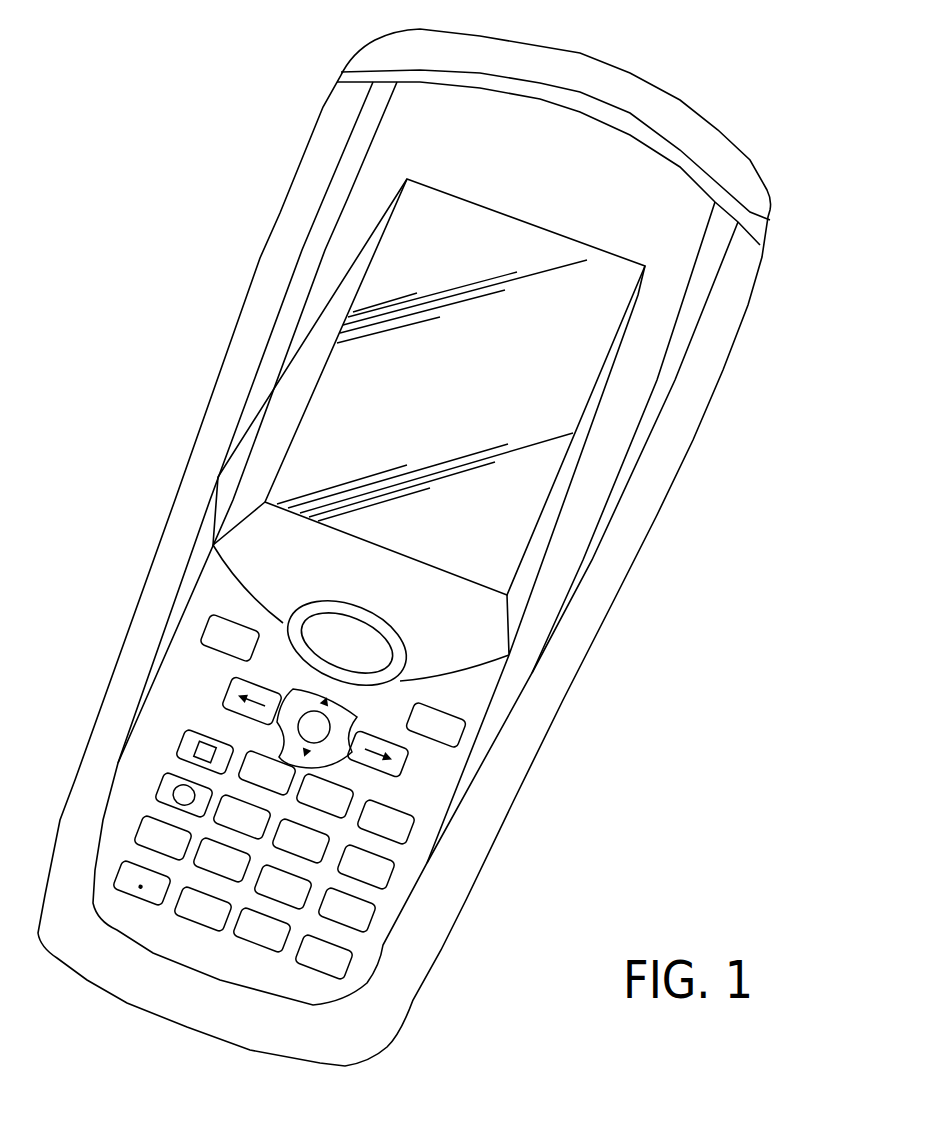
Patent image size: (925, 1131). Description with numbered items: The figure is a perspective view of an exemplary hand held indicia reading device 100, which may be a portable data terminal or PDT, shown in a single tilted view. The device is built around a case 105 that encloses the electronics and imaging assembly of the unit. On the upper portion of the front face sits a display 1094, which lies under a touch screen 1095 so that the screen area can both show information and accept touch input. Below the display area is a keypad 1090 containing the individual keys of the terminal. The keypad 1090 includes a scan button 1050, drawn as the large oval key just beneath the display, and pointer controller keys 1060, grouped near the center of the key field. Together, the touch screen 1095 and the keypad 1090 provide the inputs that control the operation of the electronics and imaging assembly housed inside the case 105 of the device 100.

The hand held indicia reading device 100 is at (455, 547).
The case 105 is at (263, 256).
The display 1094 is at (455, 387).
The touch screen 1095 is at (468, 377).
The scan button 1050 is at (373, 628).
The keypad 1090 is at (359, 797).
The pointer controller keys 1060 is at (407, 797).